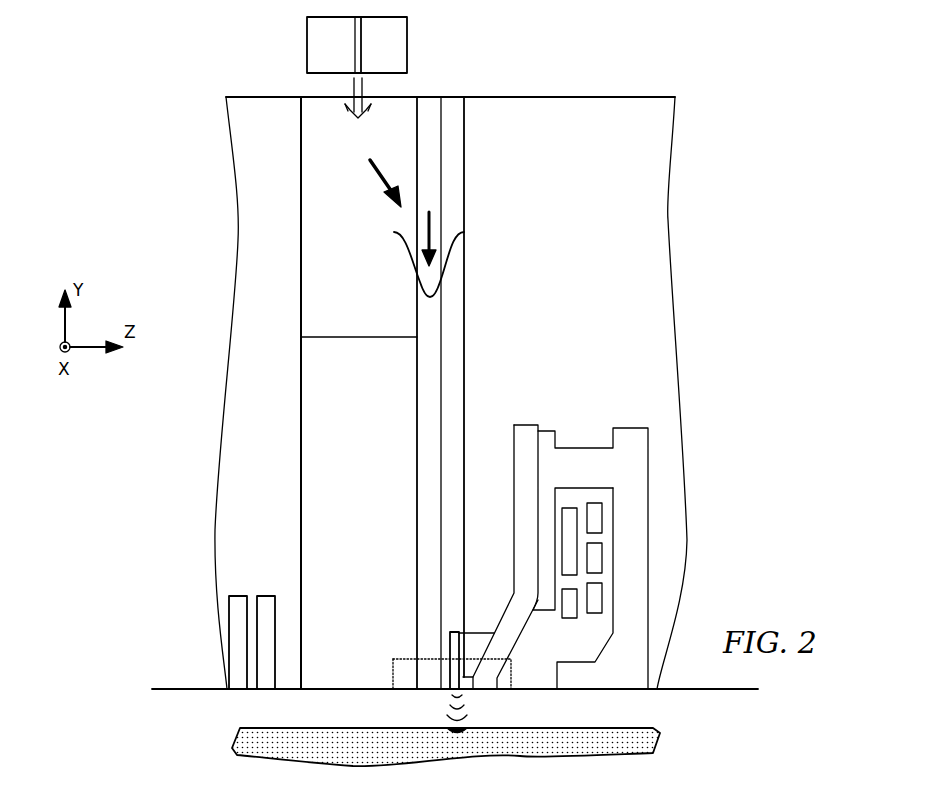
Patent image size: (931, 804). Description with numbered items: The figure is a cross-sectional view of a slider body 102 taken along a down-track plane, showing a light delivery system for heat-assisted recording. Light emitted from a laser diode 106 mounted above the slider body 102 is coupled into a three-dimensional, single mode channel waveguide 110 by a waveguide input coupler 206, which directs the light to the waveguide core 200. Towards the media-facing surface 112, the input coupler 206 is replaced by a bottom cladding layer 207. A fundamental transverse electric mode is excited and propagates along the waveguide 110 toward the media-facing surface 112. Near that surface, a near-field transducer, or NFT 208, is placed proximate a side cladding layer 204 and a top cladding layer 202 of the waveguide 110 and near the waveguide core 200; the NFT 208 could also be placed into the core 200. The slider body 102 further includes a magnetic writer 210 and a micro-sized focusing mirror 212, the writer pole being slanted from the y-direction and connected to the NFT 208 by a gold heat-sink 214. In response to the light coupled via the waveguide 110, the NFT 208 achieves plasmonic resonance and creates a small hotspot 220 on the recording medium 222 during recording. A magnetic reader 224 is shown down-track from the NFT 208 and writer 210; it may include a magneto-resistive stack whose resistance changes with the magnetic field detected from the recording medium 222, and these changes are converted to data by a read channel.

The slider body 102 is at (183, 197).
The laser diode 106 is at (307, 31).
The channel waveguide 110 is at (158, 562).
The media-facing surface 112 is at (745, 690).
The waveguide core 200 is at (434, 111).
The top cladding layer 202 is at (497, 117).
The side cladding layer 204 is at (460, 117).
The waveguide input coupler 206 is at (312, 117).
The bottom cladding layer 207 is at (301, 465).
The near-field transducer (NFT) 208 is at (450, 635).
The magnetic writer 210 is at (566, 392).
The focusing mirror 212 is at (393, 668).
The heat-sink 214 is at (490, 633).
The hotspot 220 is at (464, 735).
The recording medium 222 is at (614, 729).
The magnetic reader 224 is at (229, 627).